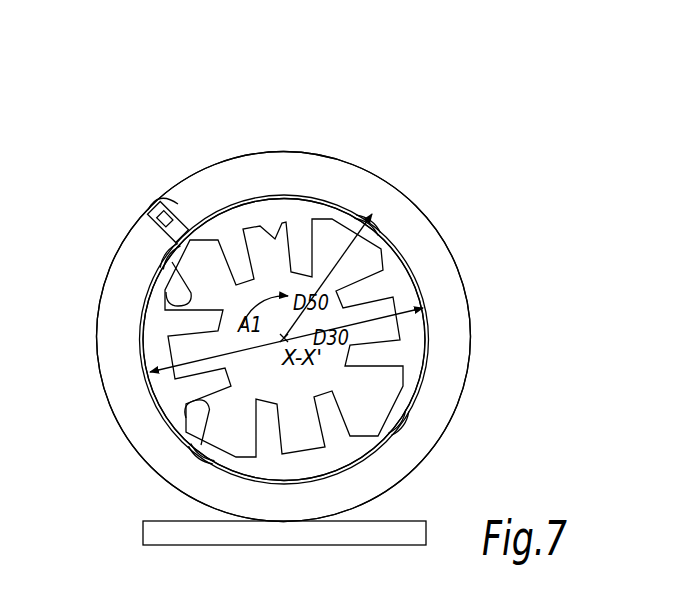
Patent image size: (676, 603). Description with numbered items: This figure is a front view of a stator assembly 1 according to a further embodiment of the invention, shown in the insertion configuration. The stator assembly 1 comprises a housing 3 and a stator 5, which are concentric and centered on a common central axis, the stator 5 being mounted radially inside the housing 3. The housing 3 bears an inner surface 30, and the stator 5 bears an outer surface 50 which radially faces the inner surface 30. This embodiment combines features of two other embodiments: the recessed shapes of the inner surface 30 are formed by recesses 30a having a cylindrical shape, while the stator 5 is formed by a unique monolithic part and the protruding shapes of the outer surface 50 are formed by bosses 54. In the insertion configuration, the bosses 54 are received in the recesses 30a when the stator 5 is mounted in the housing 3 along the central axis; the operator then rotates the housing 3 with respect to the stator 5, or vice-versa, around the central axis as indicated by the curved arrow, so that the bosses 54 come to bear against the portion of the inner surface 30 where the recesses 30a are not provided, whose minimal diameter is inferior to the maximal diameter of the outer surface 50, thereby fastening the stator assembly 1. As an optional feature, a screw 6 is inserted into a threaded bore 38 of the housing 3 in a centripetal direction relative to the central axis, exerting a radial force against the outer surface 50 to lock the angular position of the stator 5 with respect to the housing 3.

The stator assembly 1 is at (311, 288).
The housing 3 is at (457, 371).
The stator 5 is at (408, 293).
The screw 6 is at (172, 197).
The inner surface 30 is at (262, 212).
The recesses 30a is at (163, 261).
The threaded bore 38 is at (150, 238).
The outer surface 50 is at (333, 188).
The bosses 54 is at (377, 211).